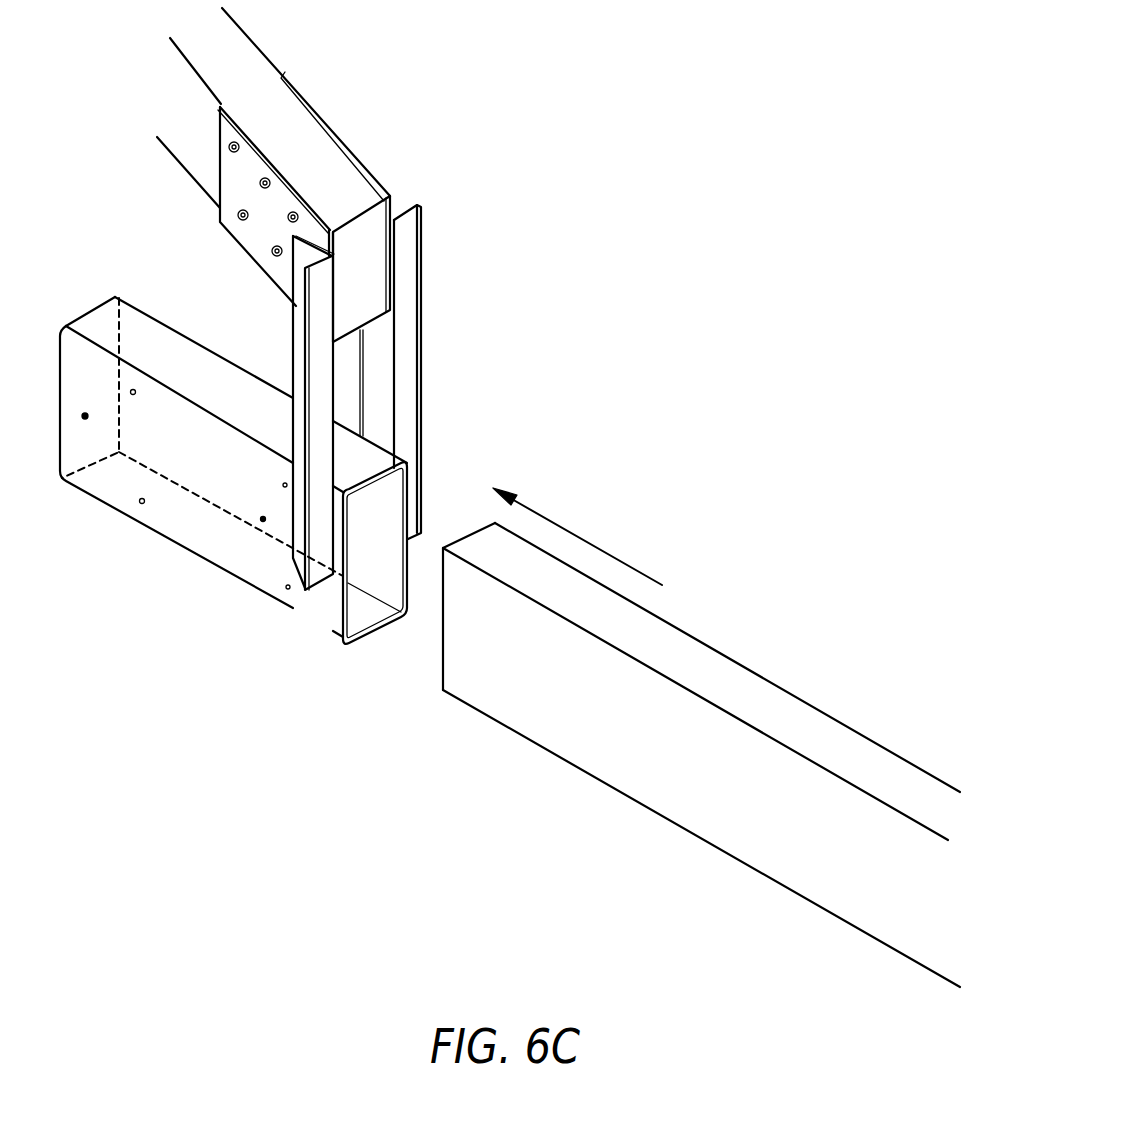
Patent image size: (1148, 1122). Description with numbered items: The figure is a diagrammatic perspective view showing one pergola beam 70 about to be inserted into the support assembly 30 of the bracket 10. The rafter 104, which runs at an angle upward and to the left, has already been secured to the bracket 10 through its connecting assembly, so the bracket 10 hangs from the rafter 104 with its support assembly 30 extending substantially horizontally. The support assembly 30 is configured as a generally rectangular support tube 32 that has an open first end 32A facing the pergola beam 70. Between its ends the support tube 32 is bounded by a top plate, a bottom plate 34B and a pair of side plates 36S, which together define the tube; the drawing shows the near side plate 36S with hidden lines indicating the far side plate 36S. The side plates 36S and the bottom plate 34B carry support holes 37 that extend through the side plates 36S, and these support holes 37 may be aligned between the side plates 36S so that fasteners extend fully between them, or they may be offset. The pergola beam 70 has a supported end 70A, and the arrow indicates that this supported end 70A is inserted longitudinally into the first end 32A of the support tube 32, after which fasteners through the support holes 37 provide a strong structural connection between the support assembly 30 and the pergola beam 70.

The bracket 10 is at (127, 580).
The rafter 104 is at (245, 68).
The support assembly 30 is at (226, 490).
The support tube 32 is at (217, 537).
The first end 32A is at (375, 630).
The bottom plate 34B is at (268, 600).
The side plates 36S is at (216, 352).
The support holes 37 is at (142, 498).
The pergola beam 70 is at (747, 688).
The supported end 70A is at (442, 643).